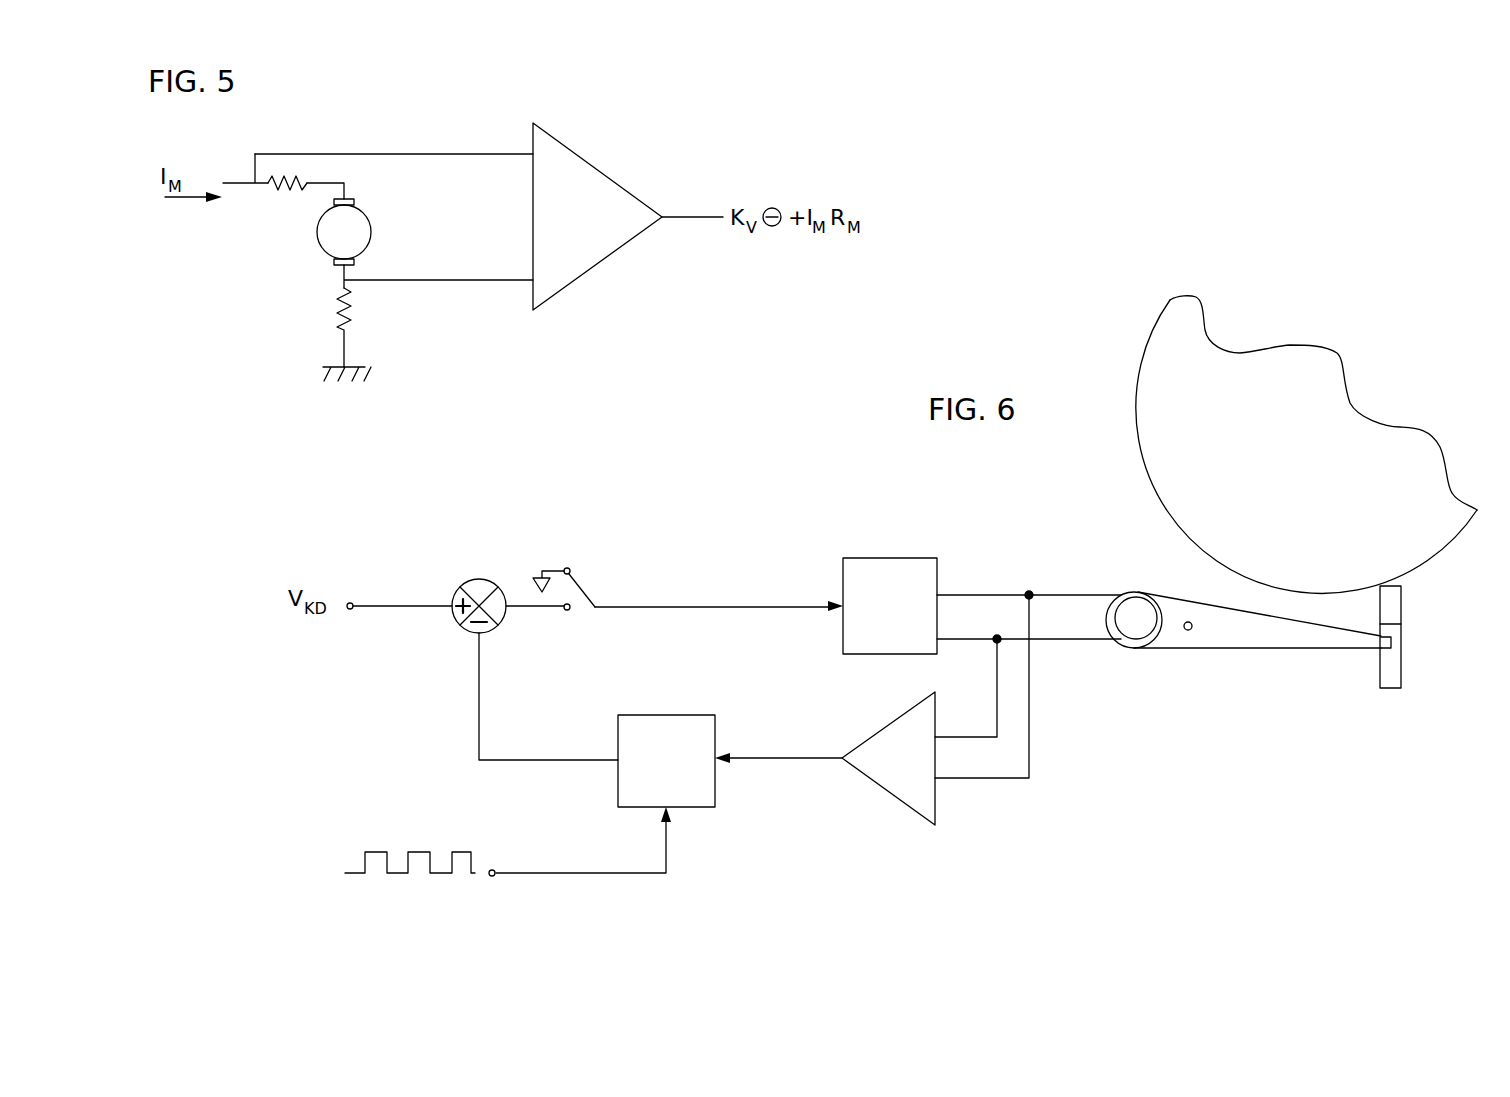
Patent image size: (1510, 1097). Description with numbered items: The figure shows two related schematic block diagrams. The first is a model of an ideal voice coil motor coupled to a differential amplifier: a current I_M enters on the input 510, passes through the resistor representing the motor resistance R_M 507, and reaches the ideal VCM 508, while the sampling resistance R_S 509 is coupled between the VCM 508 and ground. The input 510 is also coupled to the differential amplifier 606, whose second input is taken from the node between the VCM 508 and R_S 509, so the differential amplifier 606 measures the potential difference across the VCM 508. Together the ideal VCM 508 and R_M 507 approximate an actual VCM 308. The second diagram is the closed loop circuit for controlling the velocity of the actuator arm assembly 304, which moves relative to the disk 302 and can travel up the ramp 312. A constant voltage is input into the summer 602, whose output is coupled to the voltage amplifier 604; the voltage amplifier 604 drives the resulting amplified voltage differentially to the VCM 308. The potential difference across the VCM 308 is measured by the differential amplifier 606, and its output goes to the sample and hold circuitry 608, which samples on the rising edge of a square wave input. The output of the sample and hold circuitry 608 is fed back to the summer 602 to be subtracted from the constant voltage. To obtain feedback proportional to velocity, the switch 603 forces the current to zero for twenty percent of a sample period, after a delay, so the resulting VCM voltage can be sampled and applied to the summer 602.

In FIG. 5, the input 510 is at (239, 183).
In FIG. 5, the motor resistance R_M 507 is at (302, 182).
In FIG. 5, the ideal VCM 508 is at (370, 222).
In FIG. 5, the sampling resistance R_S 509 is at (341, 302).
In FIG. 5, the differential amplifier 606 is at (590, 253).
In FIG. 6, the differential amplifier 606 is at (878, 783).
In FIG. 6, the summer 602 is at (477, 578).
In FIG. 6, the switch 603 is at (572, 567).
In FIG. 6, the voltage amplifier 604 is at (902, 558).
In FIG. 6, the sample and hold circuitry 608 is at (672, 715).
In FIG. 6, the disk 302 is at (1320, 576).
In FIG. 6, the actuator arm assembly 304 is at (1234, 628).
In FIG. 6, the VCM 308 is at (1136, 645).
In FIG. 6, the ramp 312 is at (1391, 675).